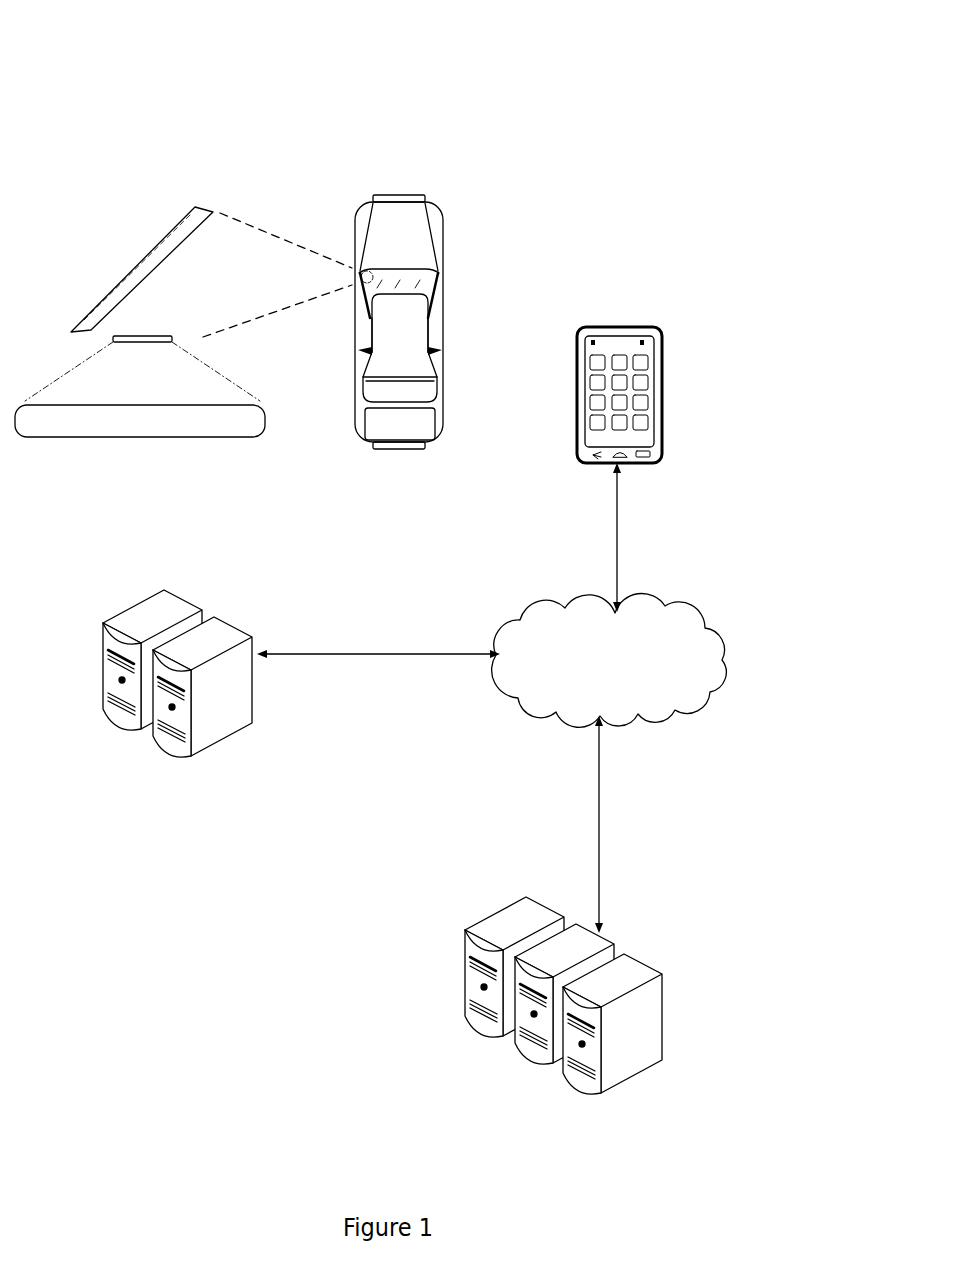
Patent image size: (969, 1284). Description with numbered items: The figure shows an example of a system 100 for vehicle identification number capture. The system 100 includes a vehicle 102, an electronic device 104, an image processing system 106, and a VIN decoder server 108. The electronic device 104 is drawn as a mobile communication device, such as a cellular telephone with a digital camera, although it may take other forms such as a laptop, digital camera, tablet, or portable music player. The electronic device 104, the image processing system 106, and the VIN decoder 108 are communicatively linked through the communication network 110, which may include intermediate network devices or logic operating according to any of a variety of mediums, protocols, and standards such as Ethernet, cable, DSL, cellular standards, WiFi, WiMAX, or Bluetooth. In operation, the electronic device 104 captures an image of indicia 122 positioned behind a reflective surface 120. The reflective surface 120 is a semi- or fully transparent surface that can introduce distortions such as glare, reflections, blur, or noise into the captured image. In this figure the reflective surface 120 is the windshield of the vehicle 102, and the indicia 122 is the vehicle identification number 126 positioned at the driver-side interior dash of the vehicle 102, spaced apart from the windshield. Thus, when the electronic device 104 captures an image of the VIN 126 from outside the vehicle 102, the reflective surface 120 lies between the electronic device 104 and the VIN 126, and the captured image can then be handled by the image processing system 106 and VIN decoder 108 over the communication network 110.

The system 100 is at (42, 37).
The vehicle 102 is at (439, 204).
The electronic device 104 is at (616, 327).
The image processing system 106 is at (183, 597).
The VIN decoder server 108 is at (496, 910).
The communication network 110 is at (651, 678).
The reflective surface 120 is at (186, 216).
The indicia 122 is at (148, 336).
The vehicle identification number 126 is at (190, 438).